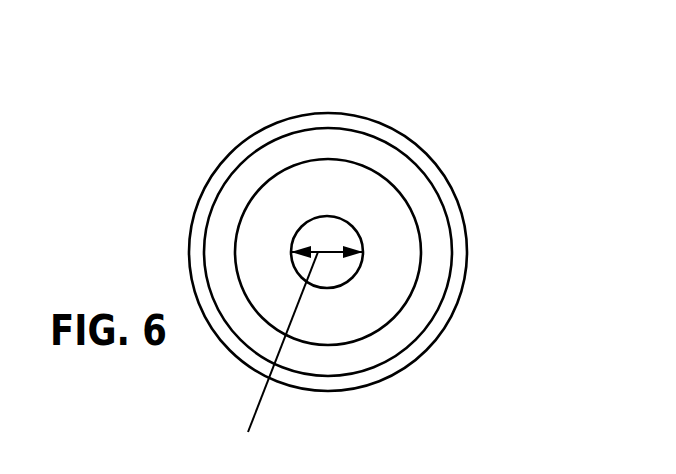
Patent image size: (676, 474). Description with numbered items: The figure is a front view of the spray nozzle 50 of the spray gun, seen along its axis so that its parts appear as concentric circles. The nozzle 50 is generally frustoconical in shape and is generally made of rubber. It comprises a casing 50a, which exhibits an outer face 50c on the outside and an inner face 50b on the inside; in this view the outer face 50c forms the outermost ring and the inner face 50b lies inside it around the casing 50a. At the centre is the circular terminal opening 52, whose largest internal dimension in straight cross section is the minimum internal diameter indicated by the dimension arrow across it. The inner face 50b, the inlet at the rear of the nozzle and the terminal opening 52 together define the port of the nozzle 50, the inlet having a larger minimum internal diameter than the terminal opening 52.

The spray nozzle 50 is at (224, 101).
The casing 50a is at (387, 230).
The inner face 50b is at (338, 277).
The outer face 50c is at (408, 320).
The terminal opening 52 is at (340, 237).